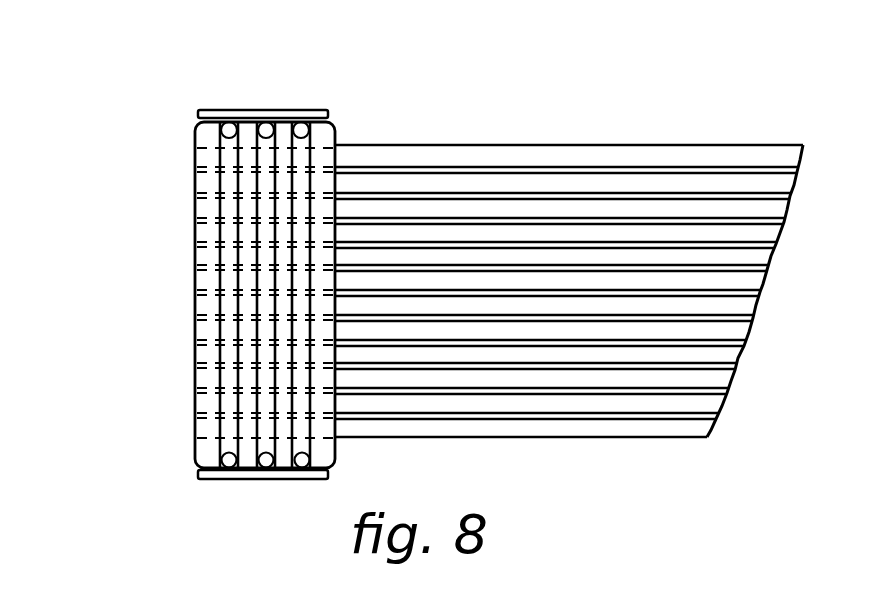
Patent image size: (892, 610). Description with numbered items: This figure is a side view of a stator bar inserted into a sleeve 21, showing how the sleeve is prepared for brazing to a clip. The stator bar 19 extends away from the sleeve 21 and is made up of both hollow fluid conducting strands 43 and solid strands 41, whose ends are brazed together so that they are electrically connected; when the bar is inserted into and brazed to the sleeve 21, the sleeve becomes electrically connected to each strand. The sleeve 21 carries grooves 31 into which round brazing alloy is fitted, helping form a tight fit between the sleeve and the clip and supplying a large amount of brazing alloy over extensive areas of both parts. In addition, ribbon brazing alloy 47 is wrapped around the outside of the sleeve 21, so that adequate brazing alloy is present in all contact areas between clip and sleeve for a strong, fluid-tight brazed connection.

The ribbon cable 19 is at (569, 290).
The sleeve 21 is at (286, 259).
The grooves 31 is at (337, 130).
The solid strands 41 is at (517, 432).
The hollow fluid conducting strands 43 is at (600, 403).
The ribbon brazing alloy 47 is at (312, 110).